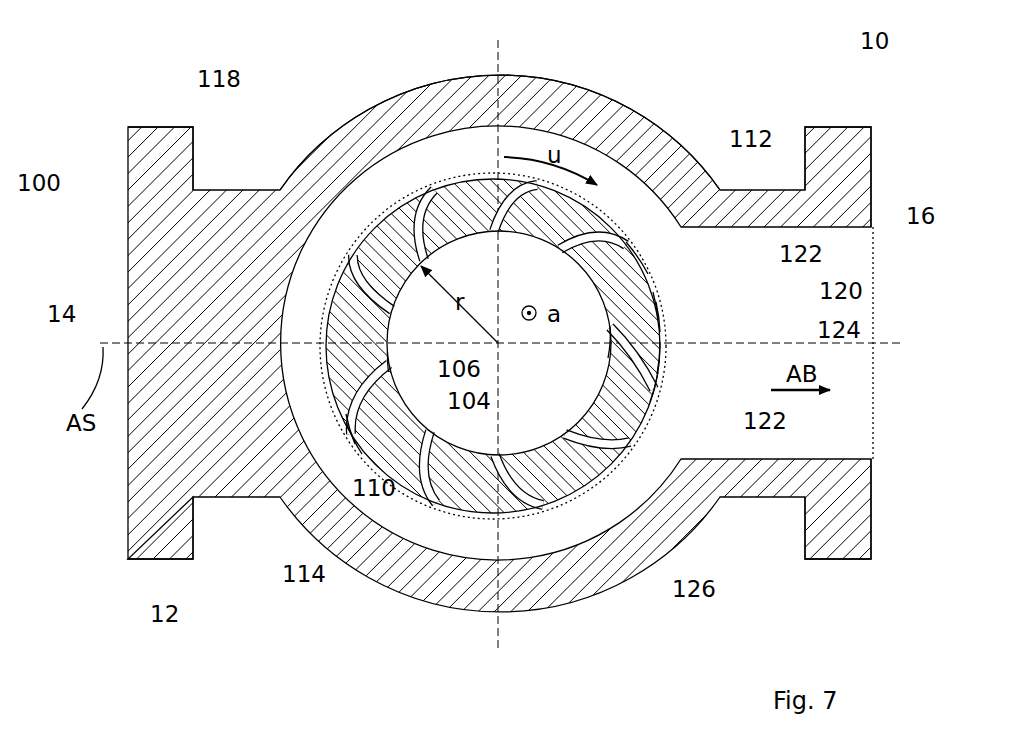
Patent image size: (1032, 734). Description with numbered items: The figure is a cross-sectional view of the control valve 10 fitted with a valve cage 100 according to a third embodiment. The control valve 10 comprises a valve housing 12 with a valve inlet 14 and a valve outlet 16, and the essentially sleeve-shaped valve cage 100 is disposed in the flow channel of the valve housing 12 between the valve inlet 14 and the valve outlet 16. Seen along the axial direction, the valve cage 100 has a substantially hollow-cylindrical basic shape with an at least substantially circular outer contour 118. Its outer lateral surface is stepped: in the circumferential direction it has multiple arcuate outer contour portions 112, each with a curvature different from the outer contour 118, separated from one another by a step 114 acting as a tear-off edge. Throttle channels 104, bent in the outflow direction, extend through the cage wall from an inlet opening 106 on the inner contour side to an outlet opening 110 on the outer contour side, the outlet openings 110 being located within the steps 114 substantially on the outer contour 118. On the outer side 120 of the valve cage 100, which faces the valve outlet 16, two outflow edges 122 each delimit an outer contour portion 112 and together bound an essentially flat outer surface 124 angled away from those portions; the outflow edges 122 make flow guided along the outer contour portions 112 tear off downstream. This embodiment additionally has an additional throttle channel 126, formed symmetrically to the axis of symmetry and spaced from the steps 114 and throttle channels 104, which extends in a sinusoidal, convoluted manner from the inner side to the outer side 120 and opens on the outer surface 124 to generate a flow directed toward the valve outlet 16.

The control valve 10 is at (516, 367).
The valve housing 12 is at (162, 538).
The valve inlet 14 is at (125, 328).
The valve outlet 16 is at (855, 343).
The valve cage 100 is at (516, 367).
The throttle channel 104 is at (372, 400).
The inlet opening 106 is at (388, 363).
The outlet opening 110 is at (363, 418).
The outer contour portion 112 is at (640, 262).
The step 114 is at (352, 437).
The outer contour 118 is at (370, 227).
The outer side 120 is at (677, 310).
The outflow edge 122 is at (780, 253).
The outer surface 124 is at (667, 360).
The additional throttle channel 126 is at (690, 580).